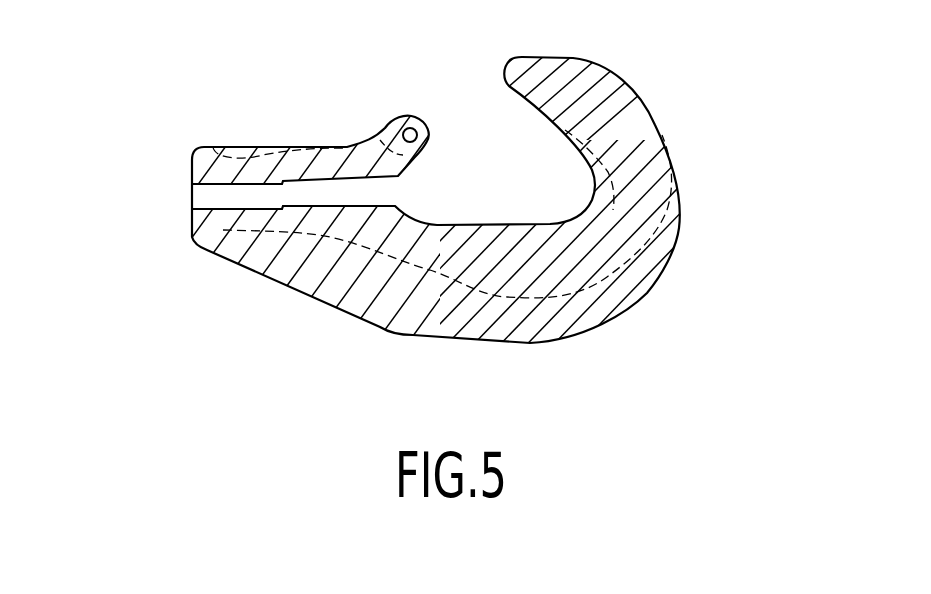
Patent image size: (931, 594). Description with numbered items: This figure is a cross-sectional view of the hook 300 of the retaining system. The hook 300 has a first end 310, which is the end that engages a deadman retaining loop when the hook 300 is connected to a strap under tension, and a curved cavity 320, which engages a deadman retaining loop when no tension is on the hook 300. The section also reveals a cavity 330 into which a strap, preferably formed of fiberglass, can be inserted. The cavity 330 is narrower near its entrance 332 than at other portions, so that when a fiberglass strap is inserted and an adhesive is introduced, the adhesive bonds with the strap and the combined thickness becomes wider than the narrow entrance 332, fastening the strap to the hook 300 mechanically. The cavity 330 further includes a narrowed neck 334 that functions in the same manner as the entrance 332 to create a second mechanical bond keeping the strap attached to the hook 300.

The hook 300 is at (627, 85).
The first end 310 is at (593, 183).
The curved cavity 320 is at (400, 190).
The cavity 330 is at (203, 198).
The entrance 332 is at (177, 212).
The narrowed neck 334 is at (283, 195).